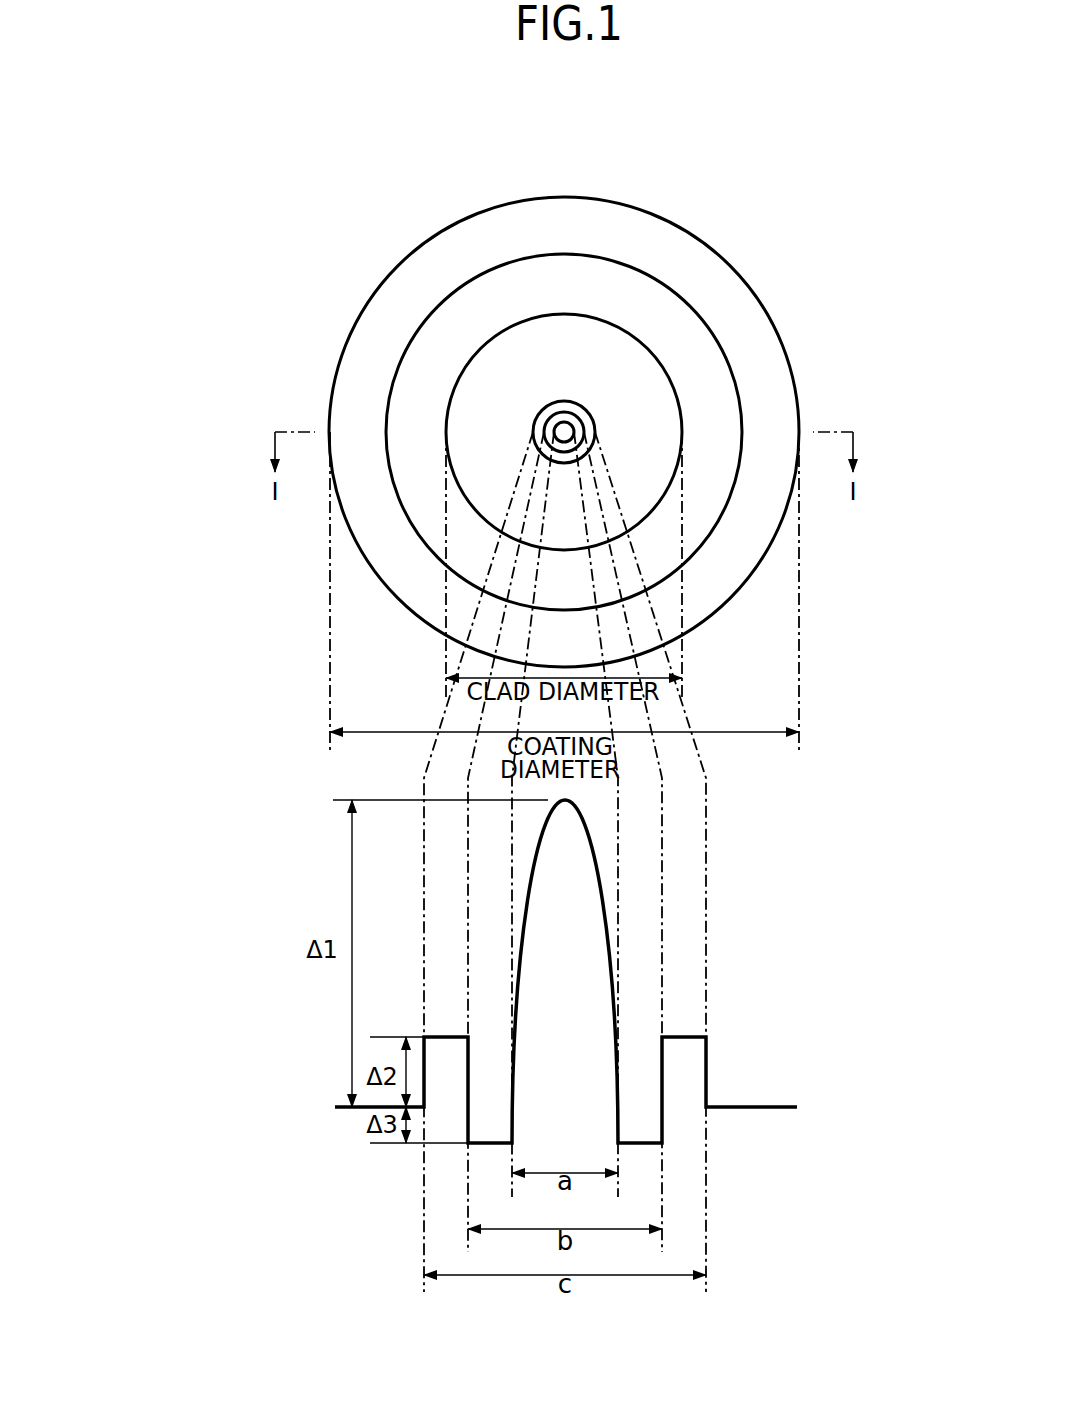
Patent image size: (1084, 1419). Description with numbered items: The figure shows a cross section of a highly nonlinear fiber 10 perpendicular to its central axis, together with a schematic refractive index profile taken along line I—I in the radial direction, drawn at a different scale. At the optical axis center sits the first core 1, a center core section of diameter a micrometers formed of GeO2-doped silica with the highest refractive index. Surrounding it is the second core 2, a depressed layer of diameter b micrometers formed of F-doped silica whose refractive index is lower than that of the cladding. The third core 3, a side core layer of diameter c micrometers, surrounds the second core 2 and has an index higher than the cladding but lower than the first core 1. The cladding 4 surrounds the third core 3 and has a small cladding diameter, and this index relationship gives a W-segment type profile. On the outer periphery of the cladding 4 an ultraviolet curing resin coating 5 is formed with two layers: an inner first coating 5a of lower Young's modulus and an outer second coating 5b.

The first core 1 is at (566, 428).
The second core 2 is at (562, 412).
The third core 3 is at (549, 404).
The cladding 4 is at (637, 362).
The coating 5 is at (218, 182).
The first coating 5a is at (455, 307).
The second coating 5b is at (393, 310).
The highly nonlinear fiber 10 is at (735, 256).